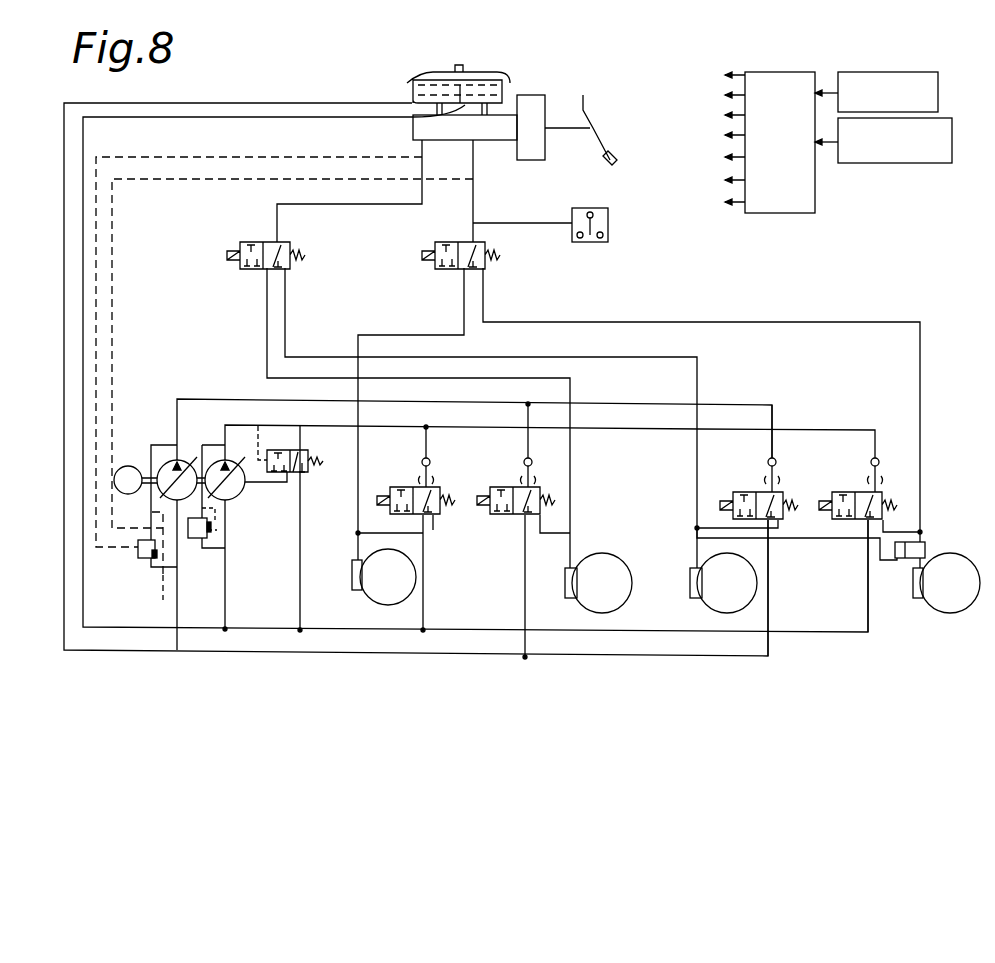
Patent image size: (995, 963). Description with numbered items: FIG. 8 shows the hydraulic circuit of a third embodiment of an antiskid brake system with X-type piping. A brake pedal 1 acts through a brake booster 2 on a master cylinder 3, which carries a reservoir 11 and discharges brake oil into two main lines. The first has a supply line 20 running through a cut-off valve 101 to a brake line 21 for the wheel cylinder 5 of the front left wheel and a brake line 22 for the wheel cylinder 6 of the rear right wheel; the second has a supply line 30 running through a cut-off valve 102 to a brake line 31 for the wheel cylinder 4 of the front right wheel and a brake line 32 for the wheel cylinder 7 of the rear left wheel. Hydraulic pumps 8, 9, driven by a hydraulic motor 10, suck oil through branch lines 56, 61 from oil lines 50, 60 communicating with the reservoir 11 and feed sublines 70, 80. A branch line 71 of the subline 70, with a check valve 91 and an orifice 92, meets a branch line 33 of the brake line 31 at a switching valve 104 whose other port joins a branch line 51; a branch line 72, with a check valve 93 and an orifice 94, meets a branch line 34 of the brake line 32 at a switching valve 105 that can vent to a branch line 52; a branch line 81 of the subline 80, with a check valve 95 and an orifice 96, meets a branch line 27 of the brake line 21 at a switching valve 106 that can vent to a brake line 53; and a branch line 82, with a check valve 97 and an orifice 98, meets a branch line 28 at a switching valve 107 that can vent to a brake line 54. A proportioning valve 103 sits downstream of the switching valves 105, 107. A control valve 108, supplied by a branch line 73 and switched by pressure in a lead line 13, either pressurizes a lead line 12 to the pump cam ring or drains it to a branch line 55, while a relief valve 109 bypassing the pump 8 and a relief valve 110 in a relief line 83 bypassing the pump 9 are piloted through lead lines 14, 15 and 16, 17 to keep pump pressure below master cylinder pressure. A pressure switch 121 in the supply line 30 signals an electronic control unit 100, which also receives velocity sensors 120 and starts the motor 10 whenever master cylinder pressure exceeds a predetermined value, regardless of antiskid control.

The brake pedal 1 is at (616, 160).
The brake booster 2 is at (545, 153).
The master cylinder 3 is at (503, 112).
The wheel cylinder 4 is at (362, 598).
The wheel cylinder 5 is at (628, 600).
The wheel cylinder 6 is at (700, 601).
The wheel cylinder 7 is at (930, 611).
The hydraulic pump 8 is at (240, 497).
The hydraulic pump 9 is at (182, 462).
The hydraulic motor 10 is at (128, 466).
The reservoir 11 is at (478, 82).
The lead line 12 is at (287, 482).
The lead line 13 is at (258, 437).
The lead line 14 is at (113, 377).
The lead line 15 is at (210, 527).
The lead line 16 is at (97, 352).
The lead line 17 is at (163, 599).
The supply line 20 is at (423, 200).
The brake line 21 is at (572, 450).
The brake line 22 is at (692, 472).
The branch line 27 is at (549, 537).
The branch line 28 is at (712, 527).
The supply line 30 is at (474, 203).
The brake line 31 is at (356, 514).
The brake line 32 is at (918, 382).
The branch line 33 is at (433, 530).
The branch line 34 is at (905, 532).
The oil line 50 is at (299, 117).
The branch line 51 is at (428, 606).
The branch line 52 is at (868, 600).
The brake line 53 is at (524, 590).
The brake line 54 is at (771, 600).
The branch line 55 is at (301, 561).
The branch line 56 is at (226, 612).
The oil line 60 is at (301, 103).
The branch line 61 is at (178, 612).
The subline 70 is at (491, 431).
The branch line 71 is at (427, 445).
The branch line 72 is at (893, 421).
The branch line 73 is at (302, 441).
The subline 80 is at (468, 405).
The branch line 81 is at (529, 445).
The branch line 82 is at (772, 448).
The relief line 83 is at (156, 572).
The check valve 91 is at (421, 458).
The orifice 92 is at (419, 480).
The check valve 93 is at (871, 459).
The orifice 94 is at (880, 482).
The check valve 95 is at (532, 469).
The orifice 96 is at (522, 481).
The check valve 97 is at (768, 460).
The orifice 98 is at (779, 481).
The electronic control unit 100 is at (781, 80).
The cut-off valve 101 is at (249, 268).
The cut-off valve 102 is at (442, 268).
The proportioning valve 103 is at (927, 551).
The switching valve 104 is at (437, 492).
The switching valve 105 is at (836, 520).
The switching valve 106 is at (491, 516).
The switching valve 107 is at (745, 492).
The control valve 108 is at (307, 472).
The relief valve 109 is at (209, 540).
The relief valve 110 is at (141, 558).
The velocity sensor 120 is at (881, 72).
The pressure switch 121 is at (608, 210).